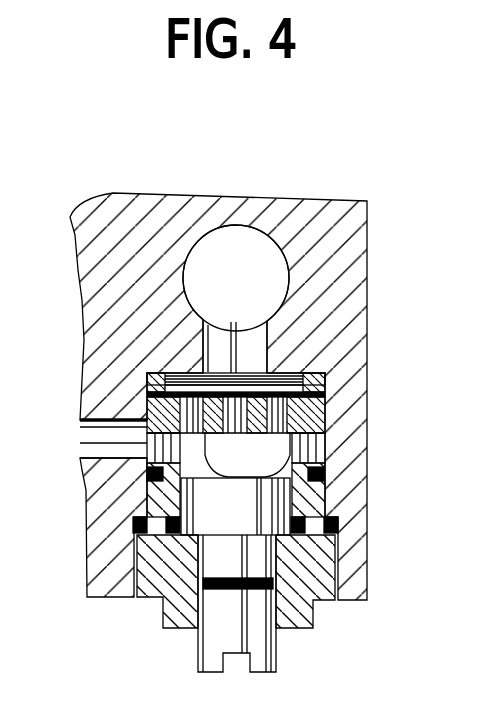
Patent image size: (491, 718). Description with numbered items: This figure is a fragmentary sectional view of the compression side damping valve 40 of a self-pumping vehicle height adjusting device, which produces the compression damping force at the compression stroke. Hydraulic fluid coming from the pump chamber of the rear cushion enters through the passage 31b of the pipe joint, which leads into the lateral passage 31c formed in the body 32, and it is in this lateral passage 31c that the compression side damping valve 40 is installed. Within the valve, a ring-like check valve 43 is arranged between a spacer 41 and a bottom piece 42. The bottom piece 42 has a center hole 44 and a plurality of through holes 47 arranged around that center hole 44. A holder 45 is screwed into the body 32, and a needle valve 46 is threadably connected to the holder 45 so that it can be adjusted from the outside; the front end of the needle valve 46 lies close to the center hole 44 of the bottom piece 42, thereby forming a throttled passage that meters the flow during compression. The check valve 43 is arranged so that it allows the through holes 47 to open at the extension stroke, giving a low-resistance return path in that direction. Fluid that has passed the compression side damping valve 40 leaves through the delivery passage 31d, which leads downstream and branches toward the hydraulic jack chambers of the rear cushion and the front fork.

The compression side damping valve 40 is at (282, 592).
The spacer 41 is at (325, 396).
The bottom piece 42 is at (326, 432).
The check valve 43 is at (318, 371).
The center hole 44 is at (231, 330).
The holder 45 is at (312, 560).
The needle valve 46 is at (210, 648).
The through holes 47 is at (147, 398).
The body 32 is at (362, 232).
The passage 31b is at (266, 246).
The lateral passage 31c is at (203, 366).
The delivery passage 31d is at (110, 458).